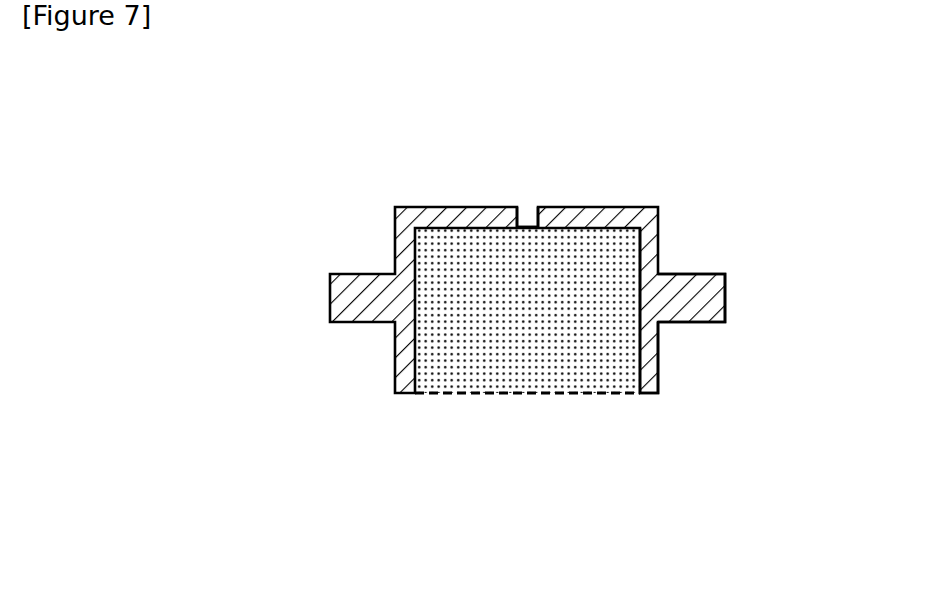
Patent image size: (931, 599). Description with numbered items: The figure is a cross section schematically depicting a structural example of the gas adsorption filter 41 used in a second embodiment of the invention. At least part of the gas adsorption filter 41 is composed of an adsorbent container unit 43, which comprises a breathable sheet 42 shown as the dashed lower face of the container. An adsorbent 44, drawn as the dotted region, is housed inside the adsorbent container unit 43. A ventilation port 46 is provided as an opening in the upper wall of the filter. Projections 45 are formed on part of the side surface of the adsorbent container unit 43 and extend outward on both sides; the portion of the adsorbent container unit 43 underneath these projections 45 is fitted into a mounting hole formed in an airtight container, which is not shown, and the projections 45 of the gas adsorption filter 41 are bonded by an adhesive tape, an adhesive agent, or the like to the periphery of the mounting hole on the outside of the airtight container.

The gas adsorption filter 41 is at (463, 207).
The breathable sheet 42 is at (565, 398).
The adsorbent container unit 43 is at (655, 347).
The adsorbent 44 is at (500, 339).
The projections 45 is at (688, 272).
The ventilation port 46 is at (527, 215).